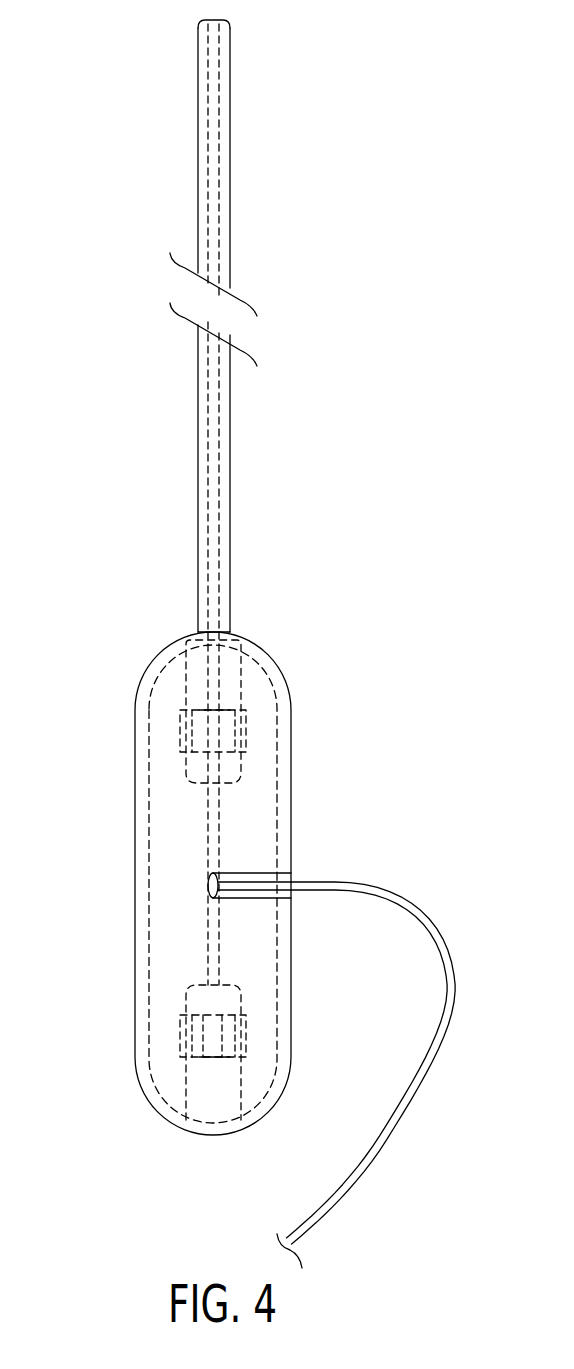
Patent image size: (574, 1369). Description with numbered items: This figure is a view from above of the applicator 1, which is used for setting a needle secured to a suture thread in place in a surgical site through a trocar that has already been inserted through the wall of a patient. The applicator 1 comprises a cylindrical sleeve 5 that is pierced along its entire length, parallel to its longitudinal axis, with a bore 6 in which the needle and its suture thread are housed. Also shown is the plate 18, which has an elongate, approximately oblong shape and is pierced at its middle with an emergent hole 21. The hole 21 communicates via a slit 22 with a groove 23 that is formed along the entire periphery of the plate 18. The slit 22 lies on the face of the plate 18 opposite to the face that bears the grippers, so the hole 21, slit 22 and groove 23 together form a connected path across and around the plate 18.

The applicator 1 is at (92, 108).
The cylindrical sleeve 5 is at (198, 393).
The bore 6 is at (415, 1092).
The plate 18 is at (175, 799).
The hole 21 is at (208, 885).
The slit 22 is at (267, 872).
The groove 23 is at (283, 700).